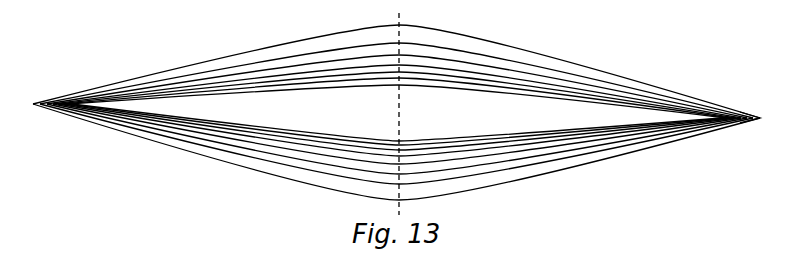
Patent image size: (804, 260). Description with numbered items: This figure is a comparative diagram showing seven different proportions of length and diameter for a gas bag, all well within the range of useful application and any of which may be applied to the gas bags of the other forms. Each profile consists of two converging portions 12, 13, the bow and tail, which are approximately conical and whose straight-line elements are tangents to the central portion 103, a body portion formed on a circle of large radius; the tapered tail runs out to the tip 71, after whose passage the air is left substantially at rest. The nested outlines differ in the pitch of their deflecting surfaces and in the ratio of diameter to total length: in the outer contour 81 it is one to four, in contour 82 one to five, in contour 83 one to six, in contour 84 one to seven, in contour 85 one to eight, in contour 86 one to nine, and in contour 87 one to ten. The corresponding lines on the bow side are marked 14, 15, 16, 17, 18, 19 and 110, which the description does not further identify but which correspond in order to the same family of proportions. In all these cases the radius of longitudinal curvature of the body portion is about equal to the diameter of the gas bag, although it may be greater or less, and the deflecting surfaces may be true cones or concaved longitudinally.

The sail panel line 14 is at (167, 75).
The sail panel line 15 is at (197, 80).
The sail panel line 16 is at (224, 84).
The sail panel line 17 is at (250, 87).
The sail panel line 18 is at (278, 88).
The sail panel line 19 is at (310, 90).
The sail panel line 110 is at (340, 92).
The outer contour 81 is at (431, 95).
The contour 82 is at (462, 88).
The contour 83 is at (502, 85).
The contour 84 is at (548, 88).
The contour 85 is at (588, 92).
The contour 86 is at (627, 93).
The contour 87 is at (665, 95).
The converging portion 12 is at (216, 150).
The converging portion 13 is at (579, 152).
The central portion 103 is at (398, 114).
The tip 71 is at (761, 118).